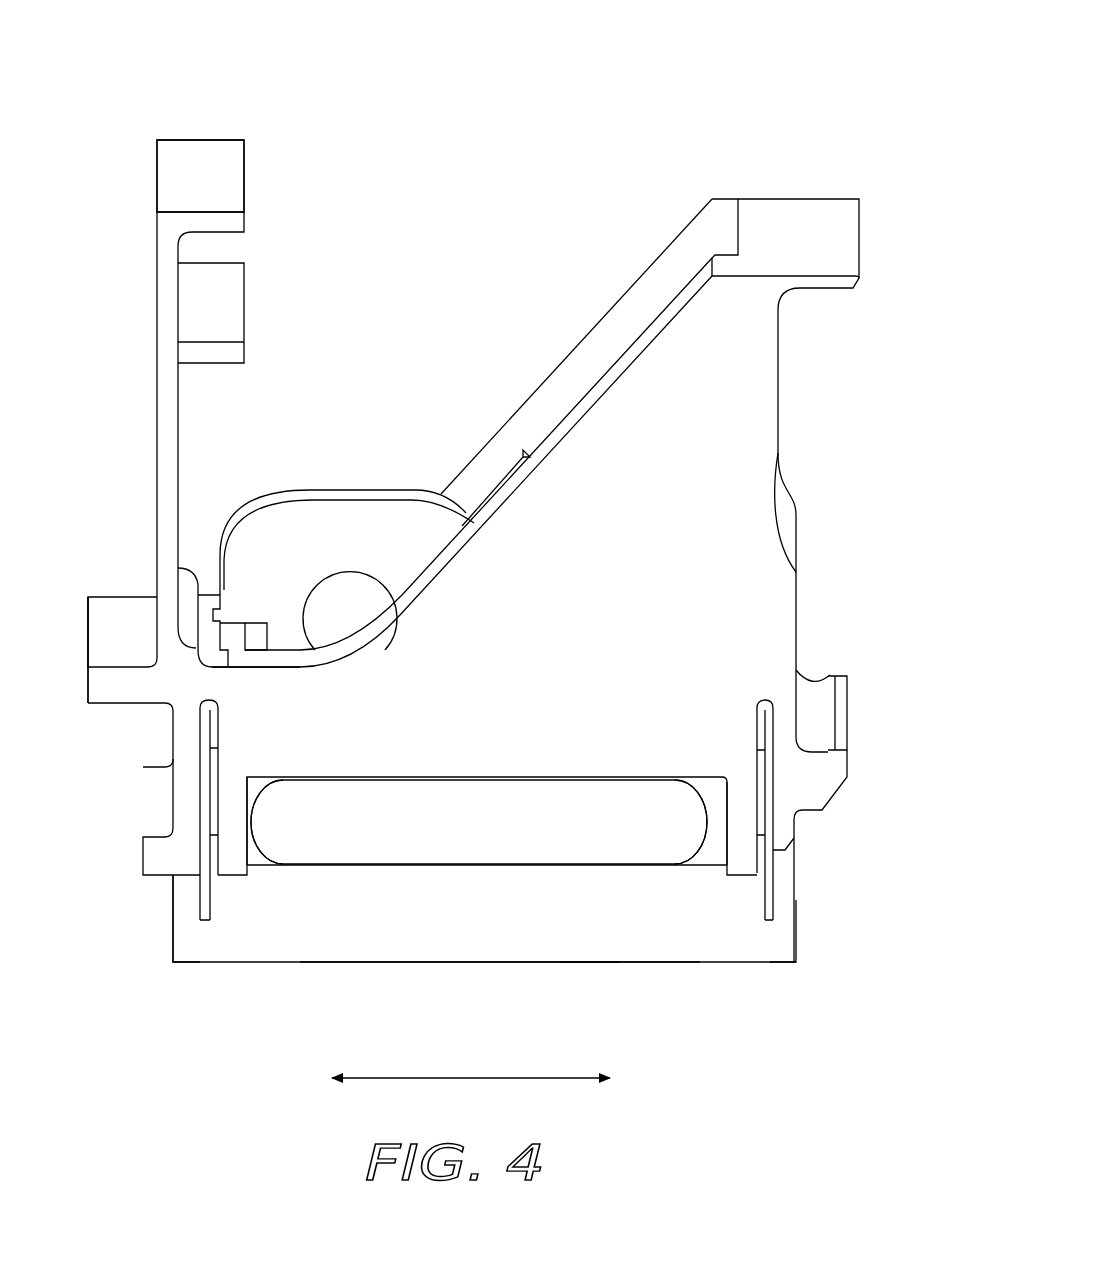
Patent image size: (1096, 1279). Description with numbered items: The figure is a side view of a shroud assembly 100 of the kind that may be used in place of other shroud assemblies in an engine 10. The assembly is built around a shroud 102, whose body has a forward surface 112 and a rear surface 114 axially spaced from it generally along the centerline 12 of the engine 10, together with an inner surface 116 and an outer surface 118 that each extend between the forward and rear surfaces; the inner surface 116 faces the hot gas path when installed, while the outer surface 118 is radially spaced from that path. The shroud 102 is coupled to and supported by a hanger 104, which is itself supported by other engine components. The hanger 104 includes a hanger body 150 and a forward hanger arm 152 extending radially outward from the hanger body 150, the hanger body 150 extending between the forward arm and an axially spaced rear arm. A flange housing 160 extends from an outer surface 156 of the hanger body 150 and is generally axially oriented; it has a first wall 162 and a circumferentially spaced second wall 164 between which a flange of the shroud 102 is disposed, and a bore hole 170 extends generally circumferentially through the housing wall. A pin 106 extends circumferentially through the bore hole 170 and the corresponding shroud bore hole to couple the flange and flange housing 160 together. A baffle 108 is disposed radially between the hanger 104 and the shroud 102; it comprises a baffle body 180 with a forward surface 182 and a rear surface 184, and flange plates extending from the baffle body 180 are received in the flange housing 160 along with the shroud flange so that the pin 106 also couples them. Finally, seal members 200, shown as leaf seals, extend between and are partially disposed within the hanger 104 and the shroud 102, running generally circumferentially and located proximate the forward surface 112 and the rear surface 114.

The shroud assembly 100 is at (660, 93).
The engine 10 is at (619, 920).
The centerline 12 is at (500, 1078).
The shroud 102 is at (196, 977).
The hanger 104 is at (116, 310).
The pin 106 is at (367, 588).
The baffle 108 is at (326, 866).
The forward surface 112 is at (176, 958).
The rear surface 114 is at (797, 960).
The inner surface 116 is at (455, 968).
The outer surface 118 is at (702, 862).
The hanger body 150 is at (262, 688).
The forward hanger arm 152 is at (148, 205).
The outer surface 156 is at (757, 333).
The flange housing 160 is at (362, 485).
The first wall 162 is at (316, 518).
The second wall 164 is at (283, 492).
The bore hole 170 is at (345, 573).
The baffle body 180 is at (393, 843).
The forward surface 182 is at (247, 815).
The rear surface 184 is at (713, 820).
The seal member 200 is at (188, 893).